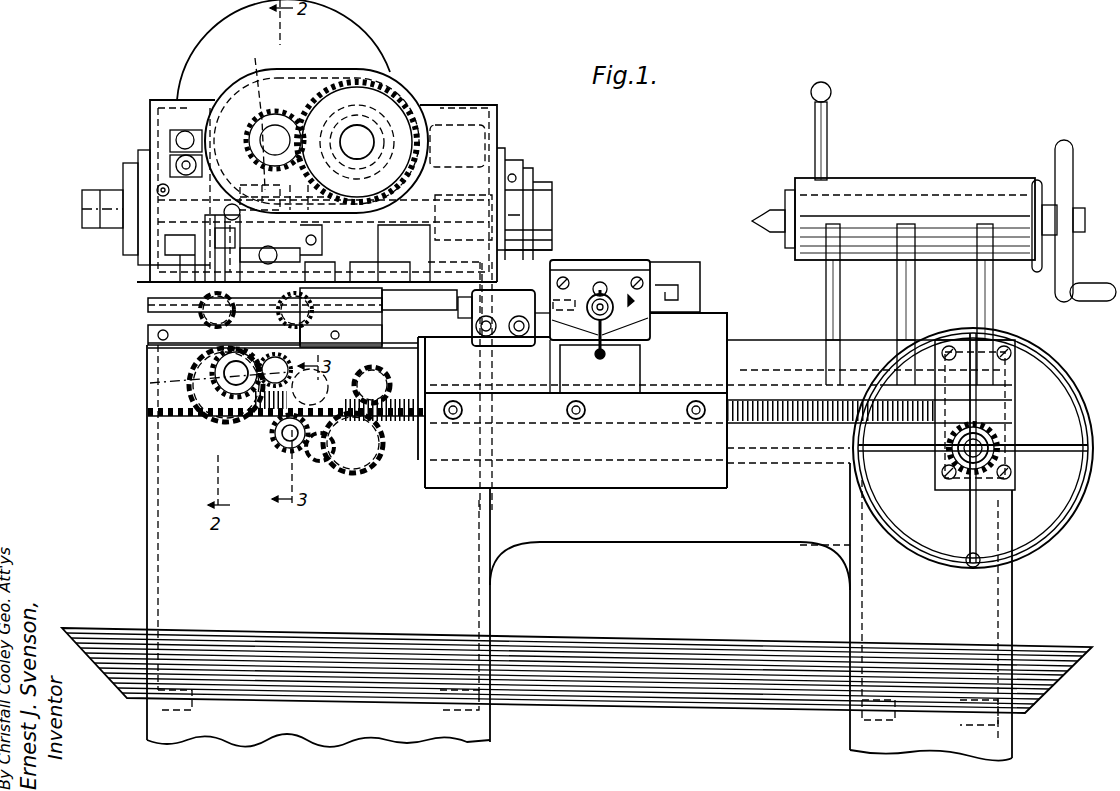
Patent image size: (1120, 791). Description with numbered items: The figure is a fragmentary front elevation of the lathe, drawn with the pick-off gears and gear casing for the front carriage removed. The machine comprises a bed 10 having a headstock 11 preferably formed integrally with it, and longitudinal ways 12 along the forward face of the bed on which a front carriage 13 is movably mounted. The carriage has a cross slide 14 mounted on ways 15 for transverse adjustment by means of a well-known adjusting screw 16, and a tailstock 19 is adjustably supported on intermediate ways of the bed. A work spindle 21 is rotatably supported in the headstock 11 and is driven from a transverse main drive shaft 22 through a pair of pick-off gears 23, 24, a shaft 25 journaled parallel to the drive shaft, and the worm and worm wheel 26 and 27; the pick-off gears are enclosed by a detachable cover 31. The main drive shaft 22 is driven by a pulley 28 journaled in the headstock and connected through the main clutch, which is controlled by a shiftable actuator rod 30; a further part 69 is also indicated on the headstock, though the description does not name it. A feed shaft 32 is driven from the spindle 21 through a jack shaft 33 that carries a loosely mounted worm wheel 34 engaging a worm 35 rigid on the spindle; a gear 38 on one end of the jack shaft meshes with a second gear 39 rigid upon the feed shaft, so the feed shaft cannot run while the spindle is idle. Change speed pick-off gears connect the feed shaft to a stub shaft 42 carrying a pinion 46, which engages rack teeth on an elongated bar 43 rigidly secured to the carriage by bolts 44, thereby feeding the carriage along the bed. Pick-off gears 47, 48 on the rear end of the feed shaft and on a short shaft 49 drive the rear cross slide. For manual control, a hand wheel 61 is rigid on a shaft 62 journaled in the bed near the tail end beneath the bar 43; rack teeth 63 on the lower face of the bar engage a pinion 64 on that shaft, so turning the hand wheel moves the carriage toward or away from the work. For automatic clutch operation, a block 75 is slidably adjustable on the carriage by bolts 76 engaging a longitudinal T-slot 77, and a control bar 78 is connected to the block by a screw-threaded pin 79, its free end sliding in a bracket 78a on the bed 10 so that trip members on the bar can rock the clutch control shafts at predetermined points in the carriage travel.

The bed 10 is at (633, 522).
The headstock 11 is at (472, 116).
The longitudinal ways 12 is at (760, 384).
The front carriage 13 is at (727, 313).
The cross slide 14 is at (618, 274).
The ways 15 is at (582, 298).
The adjusting screw 16 is at (614, 310).
The tailstock 19 is at (890, 196).
The work spindle 21 is at (82, 208).
The main drive shaft 22 is at (278, 135).
The pick-off gear 23 is at (256, 114).
The pick-off gear 24 is at (375, 90).
The shaft 25 is at (360, 138).
The worm 26 is at (395, 115).
The worm wheel 27 is at (460, 126).
The pulley 28 is at (202, 57).
The shiftable actuator rod 30 is at (182, 134).
The detachable cover 31 is at (330, 70).
The feed shaft 32 is at (234, 380).
The jack shaft 33 is at (256, 310).
The worm wheel 34 is at (165, 318).
The worm 35 is at (257, 185).
The gear 38 is at (341, 317).
The gear 39 is at (190, 360).
The stub shaft 42 is at (286, 446).
The elongated bar 43 is at (389, 412).
The bolts 44 is at (687, 410).
The pinion 46 is at (282, 438).
The pick-off gear 47 is at (215, 377).
The pick-off gear 48 is at (378, 381).
The short shaft 49 is at (322, 383).
The hand wheel 61 is at (1075, 522).
The shaft 62 is at (968, 464).
The rack teeth 63 is at (995, 433).
The pinion 64 is at (990, 445).
The screw 69 is at (180, 163).
The block 75 is at (505, 344).
The bolts 76 is at (519, 320).
The T-slot 77 is at (576, 431).
The control bar 78 is at (403, 307).
The bracket 78a is at (150, 300).
The pin 79 is at (465, 318).